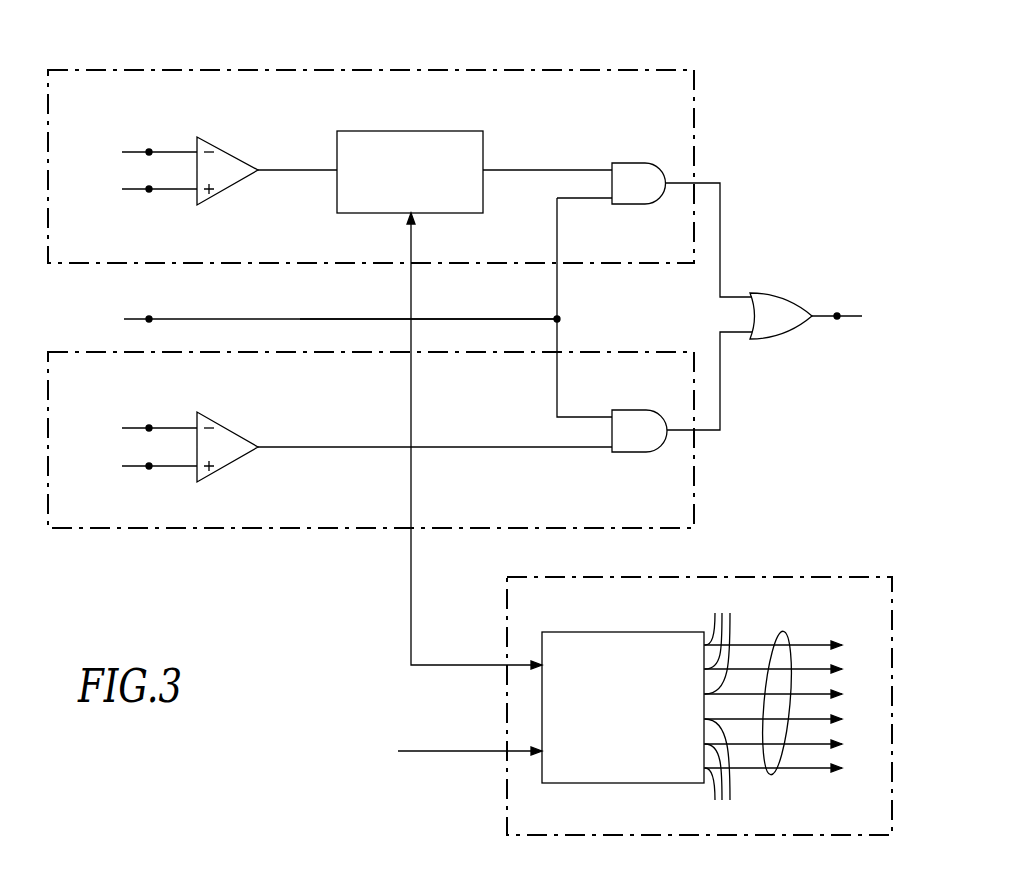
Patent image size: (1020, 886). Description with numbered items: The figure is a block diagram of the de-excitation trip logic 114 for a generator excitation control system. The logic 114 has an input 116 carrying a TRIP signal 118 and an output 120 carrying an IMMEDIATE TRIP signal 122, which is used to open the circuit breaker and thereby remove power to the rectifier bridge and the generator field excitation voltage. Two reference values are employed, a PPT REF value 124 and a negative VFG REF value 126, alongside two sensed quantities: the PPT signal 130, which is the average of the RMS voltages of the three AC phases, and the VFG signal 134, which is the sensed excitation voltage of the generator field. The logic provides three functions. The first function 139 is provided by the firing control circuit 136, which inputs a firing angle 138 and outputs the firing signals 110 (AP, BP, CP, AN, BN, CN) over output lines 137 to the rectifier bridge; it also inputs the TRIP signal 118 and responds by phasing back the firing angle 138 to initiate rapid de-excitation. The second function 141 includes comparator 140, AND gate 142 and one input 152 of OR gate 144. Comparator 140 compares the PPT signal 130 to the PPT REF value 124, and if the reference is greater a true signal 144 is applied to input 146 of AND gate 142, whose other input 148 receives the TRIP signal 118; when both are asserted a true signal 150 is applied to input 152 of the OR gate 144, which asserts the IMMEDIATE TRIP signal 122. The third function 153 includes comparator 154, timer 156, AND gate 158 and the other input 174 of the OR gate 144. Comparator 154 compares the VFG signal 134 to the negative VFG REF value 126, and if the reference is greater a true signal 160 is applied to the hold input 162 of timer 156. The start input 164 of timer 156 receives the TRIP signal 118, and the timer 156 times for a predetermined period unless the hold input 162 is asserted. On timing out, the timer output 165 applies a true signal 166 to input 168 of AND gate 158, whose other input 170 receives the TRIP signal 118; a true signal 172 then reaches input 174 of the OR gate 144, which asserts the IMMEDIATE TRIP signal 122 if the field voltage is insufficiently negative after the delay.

The firing signals 110 is at (783, 632).
The de-excitation trip logic 114 is at (329, 677).
The input 116 is at (149, 319).
The TRIP signal 118 is at (325, 318).
The output 120 is at (837, 316).
The IMMEDIATE TRIP signal 122 is at (852, 318).
The PPT REF value 124 is at (149, 466).
The negative VFG REF value 126 is at (149, 189).
The PPT signal 130 is at (149, 428).
The VFG signal 134 is at (149, 152).
The firing control circuit 136 is at (598, 632).
The firing control output lines 137 is at (724, 705).
The firing angle 138 is at (440, 751).
The first function 139 is at (850, 577).
The comparator 140 is at (225, 427).
The second function 141 is at (220, 529).
The AND gate 142 is at (640, 410).
The OR gate 144 is at (322, 447).
The input 146 is at (608, 449).
The other input 148 is at (611, 412).
The true signal 150 is at (732, 330).
The input 152 is at (748, 340).
The third function 153 is at (680, 70).
The comparator 154 is at (210, 149).
The timer 156 is at (452, 131).
The AND gate 158 is at (636, 163).
The true signal 160 is at (272, 170).
The hold input 162 is at (337, 173).
The start input 164 is at (405, 219).
The timer output 165 is at (488, 170).
The true signal 166 is at (540, 173).
The input 168 is at (611, 168).
The other input 170 is at (606, 200).
The true signal 172 is at (715, 183).
The other input 174 is at (748, 292).